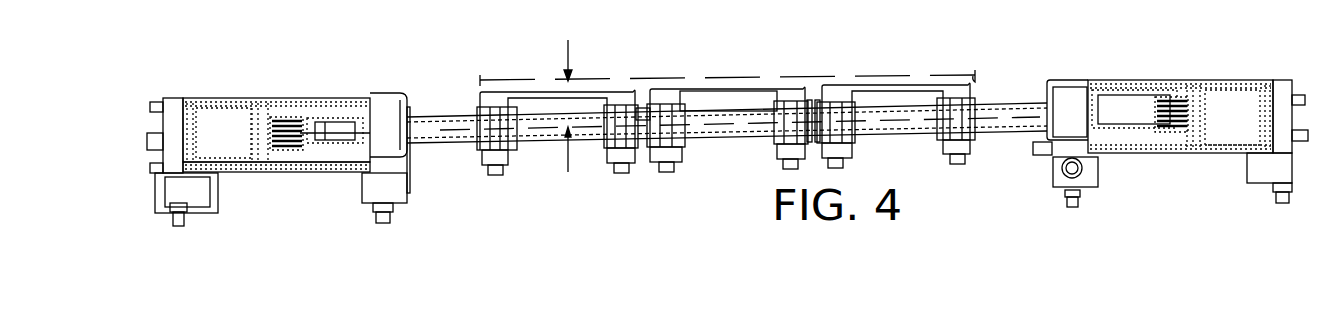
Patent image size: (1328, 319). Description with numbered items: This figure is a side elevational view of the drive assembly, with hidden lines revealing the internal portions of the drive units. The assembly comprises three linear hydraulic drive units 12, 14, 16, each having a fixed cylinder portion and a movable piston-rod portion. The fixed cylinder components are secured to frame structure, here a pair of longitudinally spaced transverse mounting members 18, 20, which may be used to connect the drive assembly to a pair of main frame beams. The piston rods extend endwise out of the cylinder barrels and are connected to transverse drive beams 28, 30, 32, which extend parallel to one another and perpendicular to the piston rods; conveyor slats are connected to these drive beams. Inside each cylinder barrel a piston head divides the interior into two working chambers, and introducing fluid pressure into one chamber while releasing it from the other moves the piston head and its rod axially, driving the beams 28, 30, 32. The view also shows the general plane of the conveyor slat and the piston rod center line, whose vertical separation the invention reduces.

The linear hydraulic drive unit 12 is at (1153, 122).
The linear hydraulic drive unit 14 is at (248, 176).
The linear hydraulic drive unit 16 is at (276, 144).
The transverse mounting member 18 is at (407, 107).
The transverse mounting member 20 is at (1047, 88).
The transverse drive beam 28 is at (908, 85).
The transverse drive beam 30 is at (760, 88).
The transverse drive beam 32 is at (522, 92).